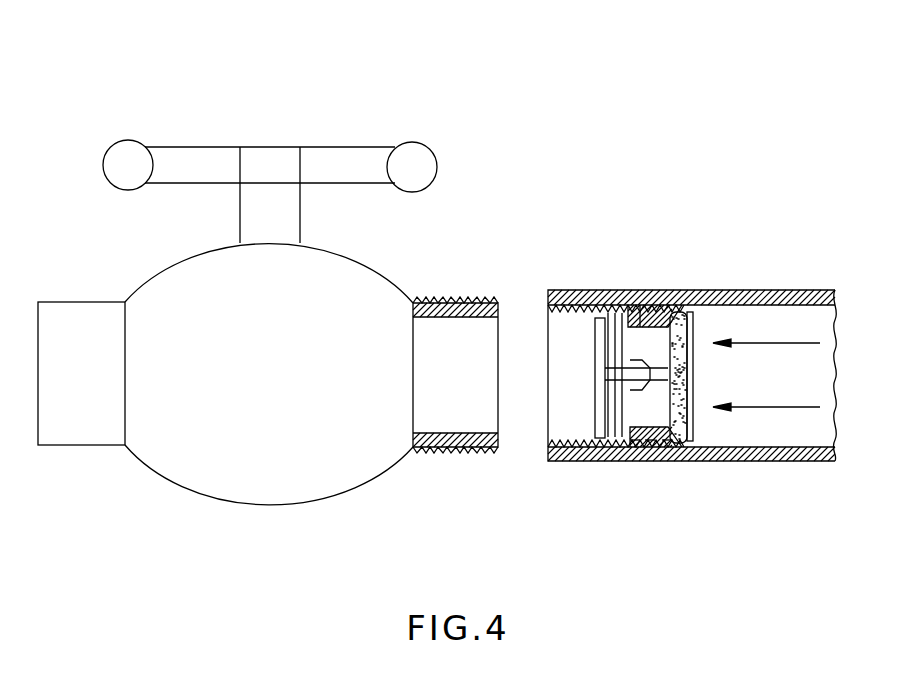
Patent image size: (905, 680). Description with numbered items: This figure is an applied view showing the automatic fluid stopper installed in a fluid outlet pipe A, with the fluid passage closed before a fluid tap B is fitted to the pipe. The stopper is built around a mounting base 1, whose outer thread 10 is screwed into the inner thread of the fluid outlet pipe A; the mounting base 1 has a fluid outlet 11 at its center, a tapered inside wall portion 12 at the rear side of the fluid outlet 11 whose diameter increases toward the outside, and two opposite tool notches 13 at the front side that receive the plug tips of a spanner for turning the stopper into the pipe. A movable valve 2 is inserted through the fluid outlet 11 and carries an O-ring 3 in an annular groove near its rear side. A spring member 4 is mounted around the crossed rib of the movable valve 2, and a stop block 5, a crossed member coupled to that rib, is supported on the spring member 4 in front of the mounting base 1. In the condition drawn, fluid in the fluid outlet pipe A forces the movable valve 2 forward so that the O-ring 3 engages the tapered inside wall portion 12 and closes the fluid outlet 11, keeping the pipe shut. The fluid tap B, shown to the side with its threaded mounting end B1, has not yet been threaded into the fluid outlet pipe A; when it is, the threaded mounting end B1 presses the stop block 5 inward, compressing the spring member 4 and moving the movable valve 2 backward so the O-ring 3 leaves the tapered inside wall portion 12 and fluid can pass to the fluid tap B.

The fluid tap B is at (190, 152).
The threaded mounting end B1 is at (465, 303).
The fluid outlet pipe A is at (800, 290).
The mounting base 1 is at (657, 312).
The movable valve 2 is at (697, 350).
The O-ring 3 is at (687, 305).
The spring member 4 is at (623, 315).
The stop block 5 is at (597, 350).
The outer thread 10 is at (650, 445).
The fluid outlet 11 is at (642, 433).
The tapered inside wall portion 12 is at (668, 440).
The tool notches 13 is at (642, 305).